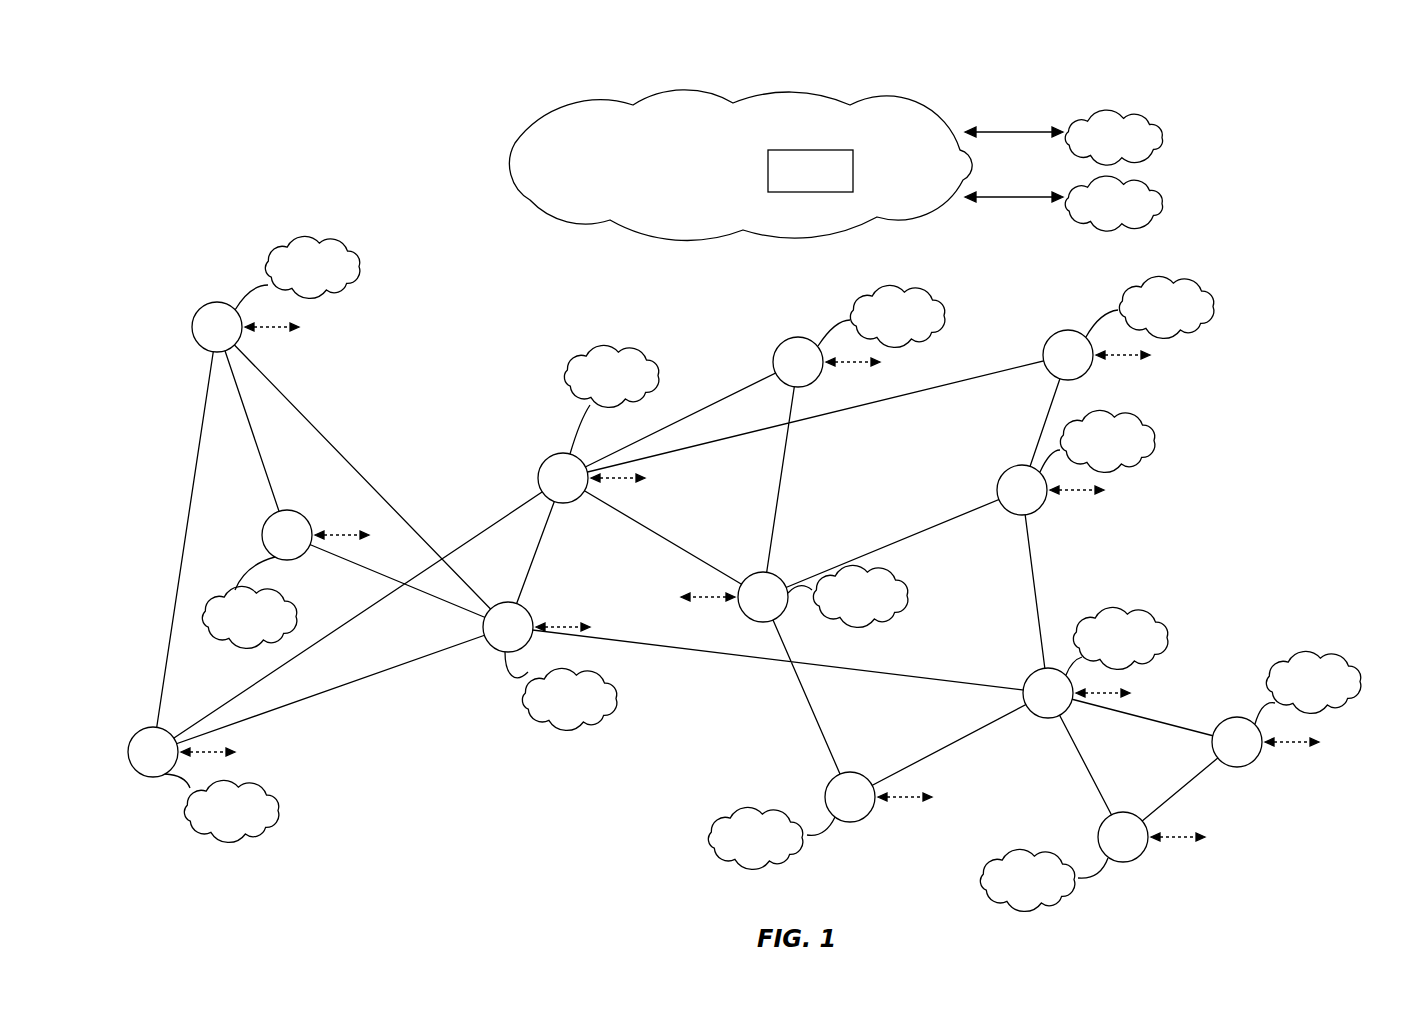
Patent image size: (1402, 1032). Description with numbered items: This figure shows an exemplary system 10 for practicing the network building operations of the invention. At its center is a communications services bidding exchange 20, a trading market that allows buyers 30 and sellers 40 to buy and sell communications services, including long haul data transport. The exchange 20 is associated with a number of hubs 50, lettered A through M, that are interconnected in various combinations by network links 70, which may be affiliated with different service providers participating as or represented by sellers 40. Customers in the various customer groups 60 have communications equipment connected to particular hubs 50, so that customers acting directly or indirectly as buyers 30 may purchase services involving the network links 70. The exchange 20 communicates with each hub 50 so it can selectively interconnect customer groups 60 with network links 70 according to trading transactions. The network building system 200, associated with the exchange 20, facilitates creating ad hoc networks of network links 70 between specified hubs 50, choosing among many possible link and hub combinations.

The system 10 is at (247, 147).
The communications services bidding exchange 20 is at (925, 108).
The buyers 30 is at (1158, 184).
The sellers 40 is at (1158, 118).
The hubs 50 is at (198, 311).
The customer groups 60 is at (353, 245).
The network links 70 is at (178, 570).
The network building system 200 is at (824, 150).